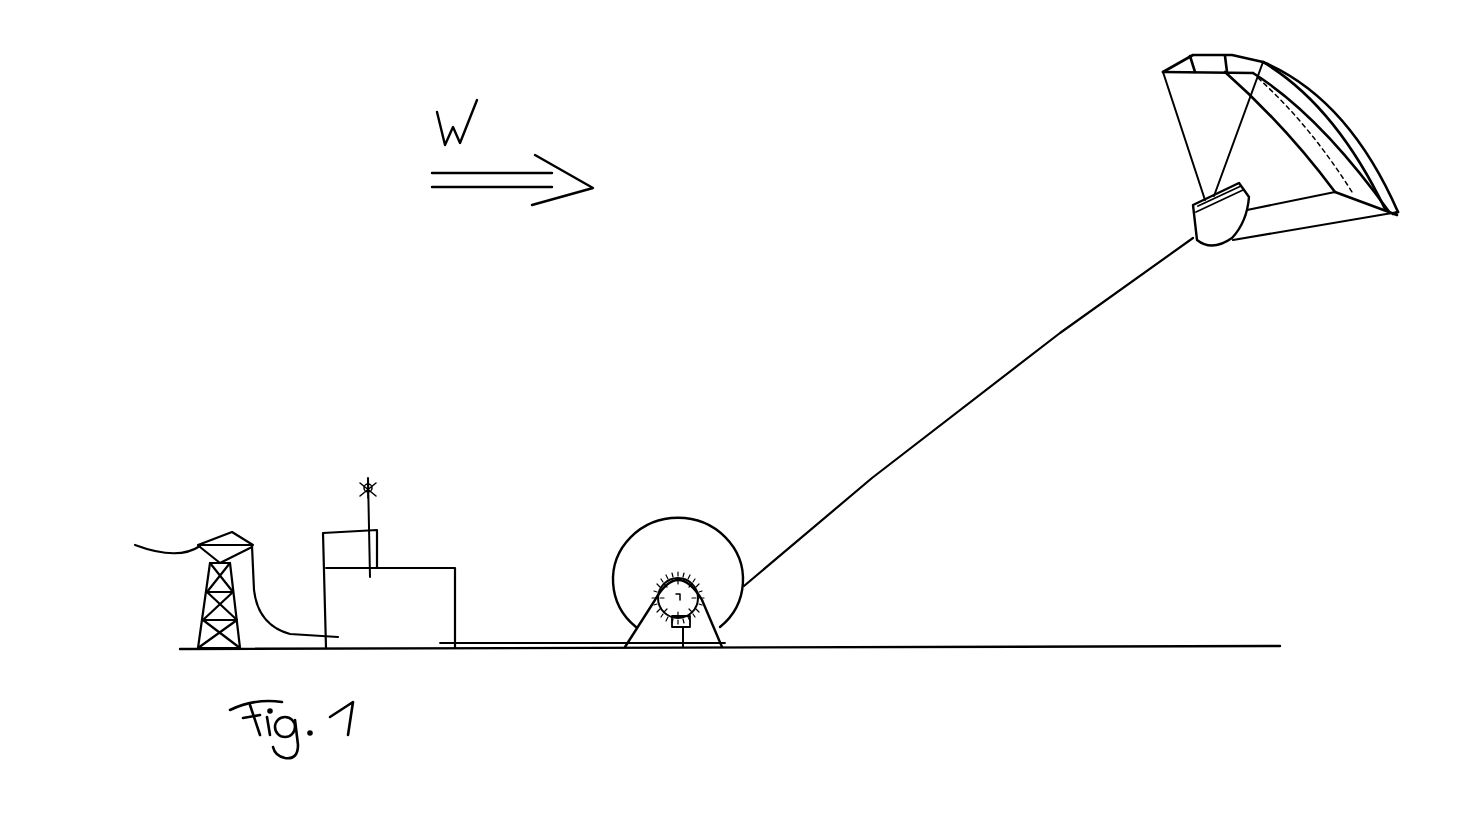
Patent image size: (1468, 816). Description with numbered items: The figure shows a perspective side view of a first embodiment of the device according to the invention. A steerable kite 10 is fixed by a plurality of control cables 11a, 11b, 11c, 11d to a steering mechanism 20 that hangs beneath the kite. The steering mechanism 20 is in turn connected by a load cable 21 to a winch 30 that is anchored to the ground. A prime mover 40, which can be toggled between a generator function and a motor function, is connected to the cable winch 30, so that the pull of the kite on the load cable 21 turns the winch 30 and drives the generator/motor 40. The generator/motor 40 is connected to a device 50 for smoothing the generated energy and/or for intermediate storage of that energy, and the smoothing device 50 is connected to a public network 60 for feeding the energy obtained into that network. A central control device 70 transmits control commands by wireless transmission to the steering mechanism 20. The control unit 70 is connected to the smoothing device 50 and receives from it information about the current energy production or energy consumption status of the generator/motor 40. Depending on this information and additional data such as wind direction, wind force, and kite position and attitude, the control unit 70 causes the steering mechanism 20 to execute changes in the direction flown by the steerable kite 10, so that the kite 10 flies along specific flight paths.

The steerable kite 10 is at (1317, 130).
The control cable 11a is at (1297, 227).
The control cable 11b is at (1273, 210).
The control cable 11c is at (1190, 145).
The control cable 11d is at (1203, 167).
The steering mechanism 20 is at (1210, 230).
The load cable 21 is at (930, 433).
The winch 30 is at (703, 553).
The prime mover 40 is at (670, 580).
The smoothing device 50 is at (412, 590).
The public network 60 is at (213, 565).
The central control device 70 is at (343, 547).